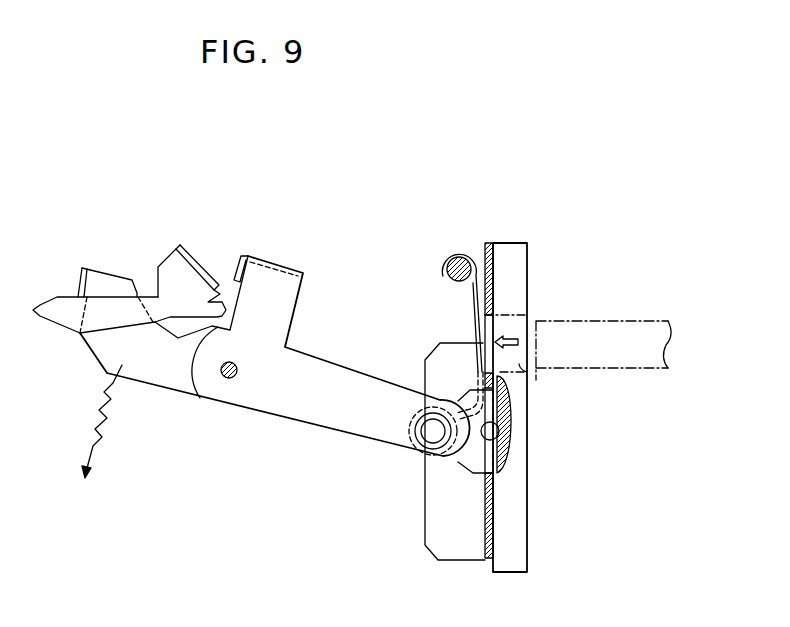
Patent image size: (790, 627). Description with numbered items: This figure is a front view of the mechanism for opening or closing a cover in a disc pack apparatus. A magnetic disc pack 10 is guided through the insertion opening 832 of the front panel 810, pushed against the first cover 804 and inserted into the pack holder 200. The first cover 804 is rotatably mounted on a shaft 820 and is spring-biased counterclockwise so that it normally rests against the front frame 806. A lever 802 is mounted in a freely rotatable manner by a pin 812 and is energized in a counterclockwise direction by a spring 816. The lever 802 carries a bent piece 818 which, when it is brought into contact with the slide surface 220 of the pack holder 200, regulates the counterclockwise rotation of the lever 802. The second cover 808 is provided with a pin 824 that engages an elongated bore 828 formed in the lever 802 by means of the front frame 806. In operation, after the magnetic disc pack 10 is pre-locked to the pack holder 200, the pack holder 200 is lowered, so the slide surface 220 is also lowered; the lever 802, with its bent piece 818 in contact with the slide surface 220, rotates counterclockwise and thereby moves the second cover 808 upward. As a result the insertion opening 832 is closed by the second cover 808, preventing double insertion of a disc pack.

The magnetic disc pack 10 is at (597, 320).
The pack holder 200 is at (203, 259).
The slide surface 220 is at (148, 296).
The lever 802 is at (318, 350).
The first cover 804 is at (478, 322).
The front frame 806 is at (480, 253).
The second cover 808 is at (506, 421).
The front panel 810 is at (530, 261).
The pin 812 is at (229, 380).
The spring 816 is at (100, 418).
The bent piece 818 is at (82, 268).
The shaft 820 is at (455, 256).
The pin 824 is at (428, 433).
The elongated bore 828 is at (438, 440).
The insertion opening 832 is at (533, 375).